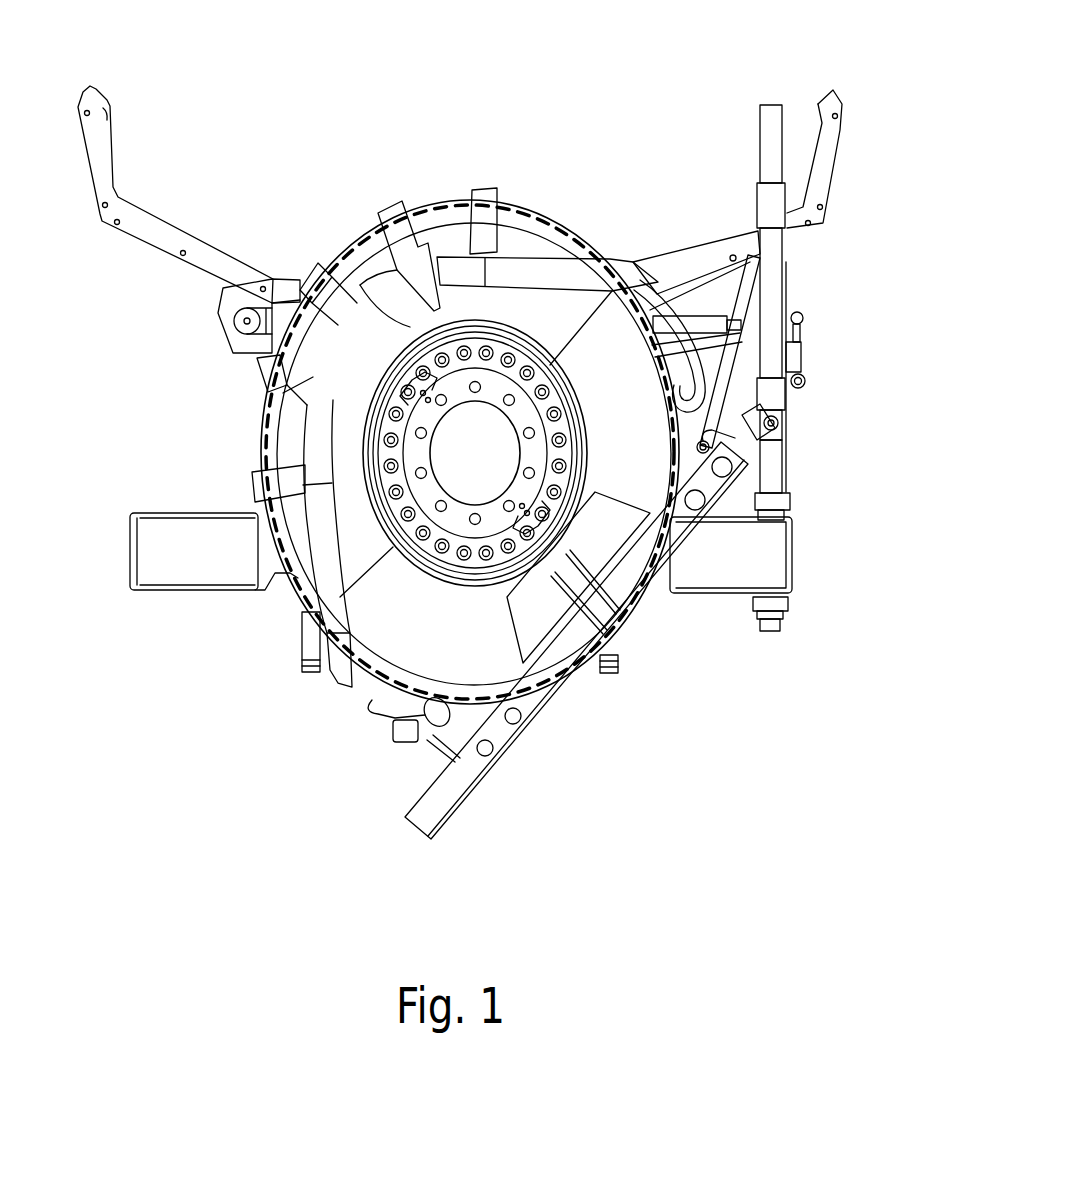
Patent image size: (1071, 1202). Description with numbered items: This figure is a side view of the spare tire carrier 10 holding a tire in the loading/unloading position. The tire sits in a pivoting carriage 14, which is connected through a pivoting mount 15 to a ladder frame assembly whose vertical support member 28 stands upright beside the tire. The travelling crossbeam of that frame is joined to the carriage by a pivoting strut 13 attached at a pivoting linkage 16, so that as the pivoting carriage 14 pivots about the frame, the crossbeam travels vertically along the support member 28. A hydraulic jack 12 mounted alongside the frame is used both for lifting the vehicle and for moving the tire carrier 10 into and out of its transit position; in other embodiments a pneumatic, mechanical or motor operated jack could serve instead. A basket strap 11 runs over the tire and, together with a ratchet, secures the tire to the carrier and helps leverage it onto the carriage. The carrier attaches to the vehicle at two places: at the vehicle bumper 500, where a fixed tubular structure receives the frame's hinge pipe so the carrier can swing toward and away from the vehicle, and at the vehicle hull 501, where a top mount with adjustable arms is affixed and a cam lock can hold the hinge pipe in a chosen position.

The spare tire carrier 10 is at (330, 765).
The basket strap 11 is at (489, 192).
The vehicle hull 501 is at (139, 227).
The vertical support member 28 is at (787, 242).
The jack 12 is at (785, 283).
The pivoting strut 13 is at (730, 363).
The pivoting mount 15 is at (773, 423).
The pivoting linkage 16 is at (737, 470).
The vehicle bumper 500 is at (773, 567).
The pivoting carriage 14 is at (545, 673).